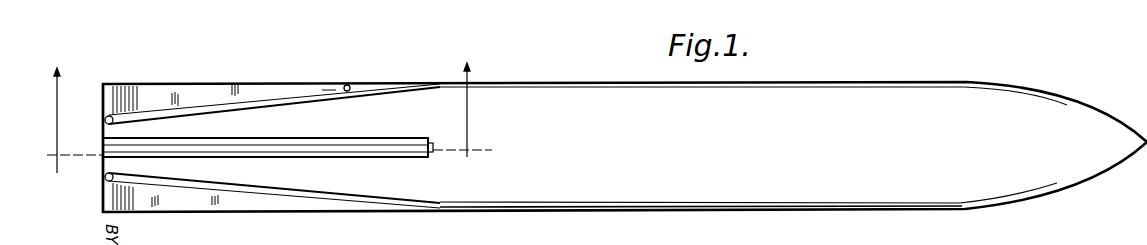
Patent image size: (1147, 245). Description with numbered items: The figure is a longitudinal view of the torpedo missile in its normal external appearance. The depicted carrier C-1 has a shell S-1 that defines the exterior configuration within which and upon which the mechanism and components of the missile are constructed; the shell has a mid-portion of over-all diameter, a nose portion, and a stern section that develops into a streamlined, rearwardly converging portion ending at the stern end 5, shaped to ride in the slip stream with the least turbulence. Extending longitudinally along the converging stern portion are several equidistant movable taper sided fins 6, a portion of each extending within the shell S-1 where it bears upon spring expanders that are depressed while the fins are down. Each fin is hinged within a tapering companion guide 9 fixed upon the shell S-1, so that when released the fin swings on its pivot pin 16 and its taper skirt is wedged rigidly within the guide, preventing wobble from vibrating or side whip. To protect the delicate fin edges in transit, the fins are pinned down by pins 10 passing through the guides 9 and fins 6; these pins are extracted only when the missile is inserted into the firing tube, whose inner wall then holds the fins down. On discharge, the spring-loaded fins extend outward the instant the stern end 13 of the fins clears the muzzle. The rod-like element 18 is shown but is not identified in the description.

The shell S-1 is at (792, 89).
The carrier C-1 is at (664, 134).
The stern end of the fins 13 is at (103, 100).
The tapering companion guides 9 is at (305, 93).
The pins 10 is at (351, 86).
The stern end 5 is at (105, 128).
The pivot pins 16 is at (106, 179).
The central rod 18 is at (585, 212).
The movable taper sided fins 6 is at (236, 211).